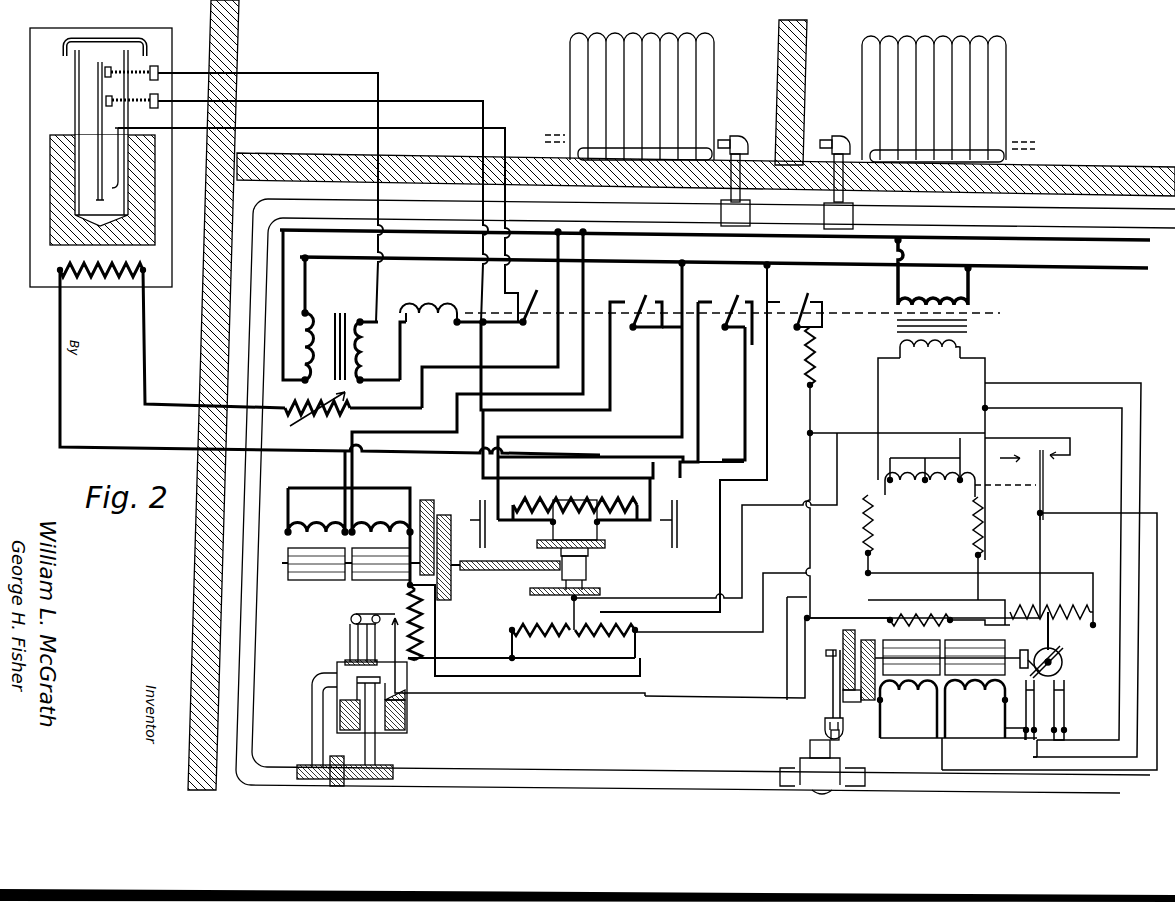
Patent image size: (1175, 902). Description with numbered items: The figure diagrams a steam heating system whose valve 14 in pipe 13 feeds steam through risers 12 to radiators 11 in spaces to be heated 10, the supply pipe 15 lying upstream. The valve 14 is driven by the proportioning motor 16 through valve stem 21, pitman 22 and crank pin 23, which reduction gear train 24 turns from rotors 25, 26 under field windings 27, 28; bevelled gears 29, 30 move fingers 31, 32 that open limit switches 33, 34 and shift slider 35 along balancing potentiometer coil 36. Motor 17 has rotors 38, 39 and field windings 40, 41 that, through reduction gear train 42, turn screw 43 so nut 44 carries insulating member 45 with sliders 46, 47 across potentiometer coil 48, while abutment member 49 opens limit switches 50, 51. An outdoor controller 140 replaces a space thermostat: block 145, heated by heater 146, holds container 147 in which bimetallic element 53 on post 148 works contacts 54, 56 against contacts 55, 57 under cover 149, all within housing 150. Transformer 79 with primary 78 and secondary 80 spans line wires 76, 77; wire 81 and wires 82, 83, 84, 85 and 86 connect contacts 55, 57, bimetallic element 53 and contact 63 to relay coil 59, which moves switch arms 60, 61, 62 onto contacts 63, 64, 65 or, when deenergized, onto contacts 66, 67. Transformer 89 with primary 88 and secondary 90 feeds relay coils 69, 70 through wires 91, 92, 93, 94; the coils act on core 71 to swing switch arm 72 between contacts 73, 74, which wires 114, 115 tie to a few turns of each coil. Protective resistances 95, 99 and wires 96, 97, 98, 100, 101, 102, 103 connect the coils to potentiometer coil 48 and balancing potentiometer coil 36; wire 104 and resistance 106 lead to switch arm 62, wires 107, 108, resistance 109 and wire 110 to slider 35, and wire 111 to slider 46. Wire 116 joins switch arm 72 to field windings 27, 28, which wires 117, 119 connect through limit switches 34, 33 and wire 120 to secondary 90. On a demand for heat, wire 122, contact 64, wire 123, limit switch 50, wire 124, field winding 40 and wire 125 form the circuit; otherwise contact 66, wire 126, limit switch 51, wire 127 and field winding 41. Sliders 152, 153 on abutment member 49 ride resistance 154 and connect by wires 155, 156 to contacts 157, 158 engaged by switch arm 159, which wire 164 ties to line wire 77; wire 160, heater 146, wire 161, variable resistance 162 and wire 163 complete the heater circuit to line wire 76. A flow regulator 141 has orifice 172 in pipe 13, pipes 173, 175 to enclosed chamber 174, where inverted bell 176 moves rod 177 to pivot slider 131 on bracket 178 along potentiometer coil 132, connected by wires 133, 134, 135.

The space to be heated 10 is at (494, 51).
The radiator 11 is at (570, 102).
The riser 12 is at (738, 158).
The pipe 13 is at (648, 210).
The valve 14 is at (810, 746).
The supply pipe 15 is at (888, 782).
The proportioning motor 16 is at (996, 755).
The motor 17 is at (293, 590).
The valve stem 21 is at (826, 732).
The pitman 22 is at (834, 682).
The crank pin 23 is at (844, 650).
The reduction gear train 24 is at (859, 732).
The motor rotor 25 is at (922, 638).
The motor rotor 26 is at (984, 638).
The field winding 27 is at (912, 702).
The field winding 28 is at (972, 702).
The bevelled gear 29 is at (1030, 650).
The bevelled gear 30 is at (1062, 656).
The finger 31 is at (1032, 672).
The finger 32 is at (1062, 672).
The limit switch 33 is at (1024, 706).
The limit switch 34 is at (1064, 706).
The slider 35 is at (1052, 628).
The balancing potentiometer coil 36 is at (1072, 608).
The rotor 38 is at (314, 574).
The rotor 39 is at (368, 574).
The field winding 40 is at (316, 528).
The field winding 41 is at (376, 528).
The reduction gear train 42 is at (451, 543).
The elongated screw 43 is at (494, 568).
The nut 44 is at (562, 562).
The member 45 is at (598, 588).
The slider 46 is at (554, 606).
The slider 47 is at (581, 632).
The potentiometer coil 48 is at (541, 632).
The abutment member 49 is at (606, 548).
The limit switch 50 is at (482, 532).
The limit switch 51 is at (678, 536).
The bimetallic element 53 is at (108, 134).
The contact 54 is at (108, 70).
The contact 55 is at (142, 70).
The contact 56 is at (110, 102).
The contact 57 is at (148, 101).
The relay coil 59 is at (432, 304).
The switch arm 60 is at (530, 324).
The switch arm 61 is at (632, 326).
The switch arm 62 is at (792, 294).
The contact 63 is at (524, 292).
The contact 64 is at (625, 296).
The contact 65 is at (780, 302).
The contact 66 is at (648, 302).
The contact 67 is at (816, 302).
The relay coil 69 is at (930, 499).
The relay coil 70 is at (957, 515).
The core 71 is at (924, 515).
The switch arm 72 is at (1046, 478).
The contact 73 is at (1010, 450).
The contact 74 is at (1055, 446).
The line wire 76 is at (780, 238).
The line wire 77 is at (837, 265).
The primary 78 is at (298, 306).
The step-down transformer 79 is at (341, 306).
The secondary 80 is at (365, 348).
The wire 81 is at (380, 80).
The wire 82 is at (466, 104).
The wire 83 is at (464, 322).
The wire 84 is at (402, 356).
The wire 85 is at (498, 130).
The wire 86 is at (500, 322).
The primary 88 is at (930, 302).
The step-down transformer 89 is at (954, 308).
The secondary 90 is at (930, 359).
The wire 91 is at (888, 358).
The wire 92 is at (878, 406).
The wire 93 is at (985, 366).
The wire 94 is at (985, 419).
The protective resistance 95 is at (862, 528).
The wire 96 is at (862, 562).
The wire 97 is at (788, 564).
The wire 98 is at (938, 572).
The protective resistance 99 is at (985, 516).
The wire 100 is at (986, 562).
The wire 101 is at (904, 600).
The wire 102 is at (510, 652).
The wire 103 is at (990, 600).
The wire 104 is at (892, 438).
The resistance 106 is at (812, 382).
The wire 107 is at (804, 534).
The wire 108 is at (842, 618).
The resistance 109 is at (908, 618).
The wire 110 is at (990, 616).
The wire 111 is at (780, 398).
The wire 114 is at (946, 456).
The wire 115 is at (1046, 440).
The wire 116 is at (954, 782).
The wire 117 is at (936, 752).
The wire 119 is at (1006, 736).
The wire 120 is at (1052, 384).
The wire 122 is at (680, 326).
The wire 123 is at (614, 410).
The wire 124 is at (294, 488).
The wire 125 is at (444, 424).
The wire 126 is at (682, 408).
The wire 127 is at (543, 470).
The slider 131 is at (395, 616).
The potentiometer coil 132 is at (426, 634).
The wire 133 is at (524, 682).
The wire 134 is at (452, 660).
The wire 135 is at (640, 696).
The outdoor controller 140 is at (110, 167).
The flow regulator 141 is at (415, 720).
The metallic block 145 is at (154, 234).
The heater 146 is at (101, 274).
The container 147 is at (75, 106).
The post 148 is at (92, 182).
The cover 149 is at (70, 40).
The housing 150 is at (158, 268).
The slider 152 is at (550, 532).
The slider 153 is at (602, 532).
The resistance 154 is at (567, 502).
The wire 155 is at (612, 444).
The wire 156 is at (738, 434).
The contact 157 is at (714, 302).
The contact 158 is at (742, 302).
The switch arm 159 is at (725, 327).
The wire 160 is at (194, 446).
The wire 161 is at (194, 402).
The variable resistance 162 is at (353, 398).
The wire 163 is at (430, 380).
The wire 164 is at (754, 342).
The orifice 172 is at (342, 756).
The pipe 173 is at (312, 680).
The enclosed chamber 174 is at (366, 700).
The pipe 175 is at (378, 748).
The inverted bell 176 is at (340, 692).
The rod 177 is at (358, 644).
The bracket 178 is at (352, 622).